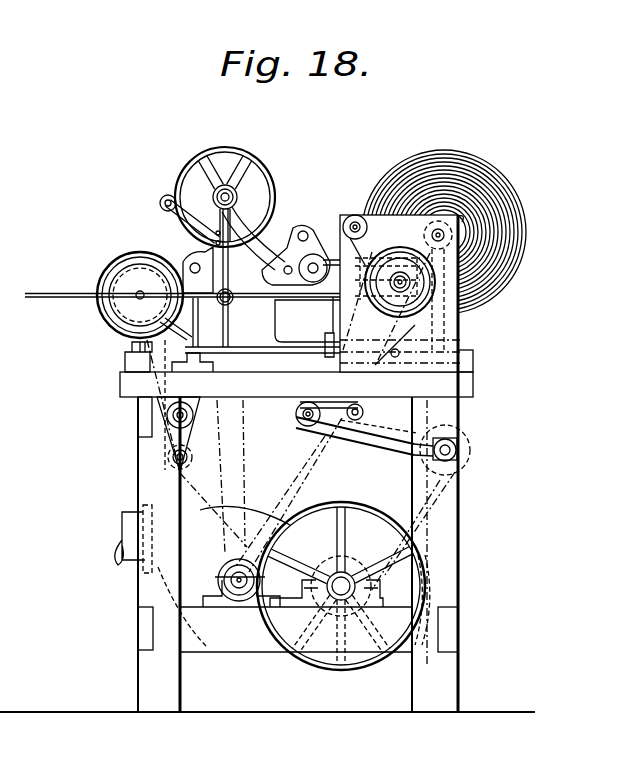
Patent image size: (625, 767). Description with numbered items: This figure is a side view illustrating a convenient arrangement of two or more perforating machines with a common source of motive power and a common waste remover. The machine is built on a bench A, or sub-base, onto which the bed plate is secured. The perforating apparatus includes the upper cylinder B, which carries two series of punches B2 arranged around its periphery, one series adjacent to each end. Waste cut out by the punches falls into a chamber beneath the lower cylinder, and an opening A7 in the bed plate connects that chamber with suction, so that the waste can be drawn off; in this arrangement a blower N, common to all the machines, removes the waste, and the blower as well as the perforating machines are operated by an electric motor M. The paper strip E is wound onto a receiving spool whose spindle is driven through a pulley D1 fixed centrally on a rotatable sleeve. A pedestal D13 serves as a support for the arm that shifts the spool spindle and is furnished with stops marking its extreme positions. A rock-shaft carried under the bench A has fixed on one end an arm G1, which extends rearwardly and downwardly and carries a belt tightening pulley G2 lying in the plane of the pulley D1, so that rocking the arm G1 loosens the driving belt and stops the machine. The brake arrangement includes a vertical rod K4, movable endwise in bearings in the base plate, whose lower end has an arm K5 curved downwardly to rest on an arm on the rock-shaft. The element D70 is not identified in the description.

The punches B2 is at (232, 156).
The upper cylinder B is at (262, 185).
The rod D70 is at (73, 283).
The pulley D1 is at (110, 310).
The pedestal D13 is at (195, 340).
The vertical rod K4 is at (328, 318).
The paper strip E is at (500, 312).
The electric motor M is at (465, 331).
The opening A7 is at (473, 363).
The bench A is at (473, 384).
The arm K5 is at (363, 412).
The arm G1 is at (378, 443).
The belt tightening pulley G2 is at (465, 457).
The blower N is at (200, 512).